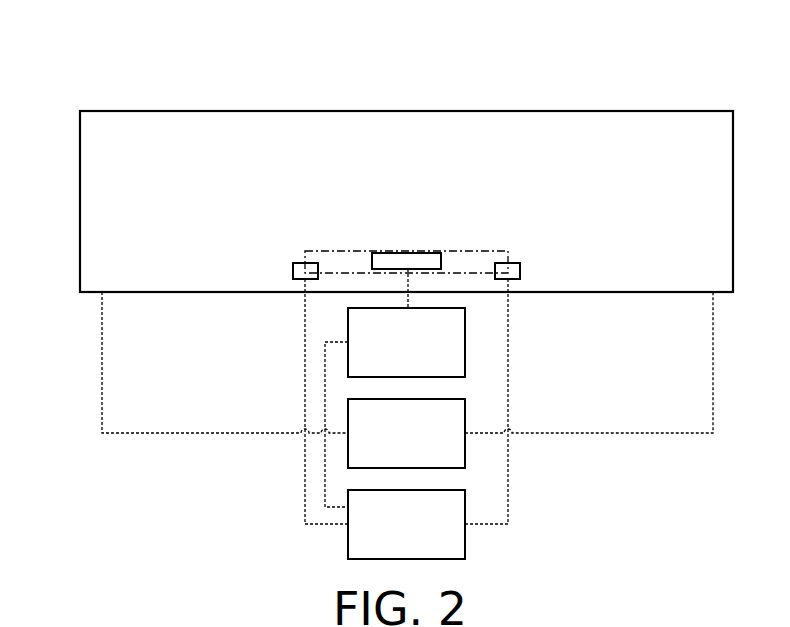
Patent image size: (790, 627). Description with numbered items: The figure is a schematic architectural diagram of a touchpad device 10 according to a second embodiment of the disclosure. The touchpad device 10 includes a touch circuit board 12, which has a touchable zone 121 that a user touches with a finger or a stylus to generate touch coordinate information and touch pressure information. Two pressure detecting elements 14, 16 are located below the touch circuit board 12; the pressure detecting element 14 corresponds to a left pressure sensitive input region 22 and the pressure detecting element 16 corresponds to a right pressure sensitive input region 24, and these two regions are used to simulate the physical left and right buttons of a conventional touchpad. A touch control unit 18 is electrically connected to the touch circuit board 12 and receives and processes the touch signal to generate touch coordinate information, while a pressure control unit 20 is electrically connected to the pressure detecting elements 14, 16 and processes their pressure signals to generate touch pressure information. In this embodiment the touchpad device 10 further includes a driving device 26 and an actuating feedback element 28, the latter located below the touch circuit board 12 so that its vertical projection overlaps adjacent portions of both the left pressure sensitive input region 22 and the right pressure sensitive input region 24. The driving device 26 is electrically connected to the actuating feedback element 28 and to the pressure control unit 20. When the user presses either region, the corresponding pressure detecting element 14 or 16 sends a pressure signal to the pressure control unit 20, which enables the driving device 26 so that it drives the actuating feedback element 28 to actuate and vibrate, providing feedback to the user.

The touchpad device 10 is at (48, 72).
The touch circuit board 12 is at (622, 111).
The touchable zone 121 is at (667, 120).
The pressure detecting element 14 is at (296, 274).
The pressure detecting element 16 is at (518, 274).
The touch control unit 18 is at (465, 450).
The pressure control unit 20 is at (465, 540).
The left pressure sensitive input region 22 is at (349, 255).
The right pressure sensitive input region 24 is at (468, 255).
The driving device 26 is at (465, 356).
The actuating feedback element 28 is at (417, 262).